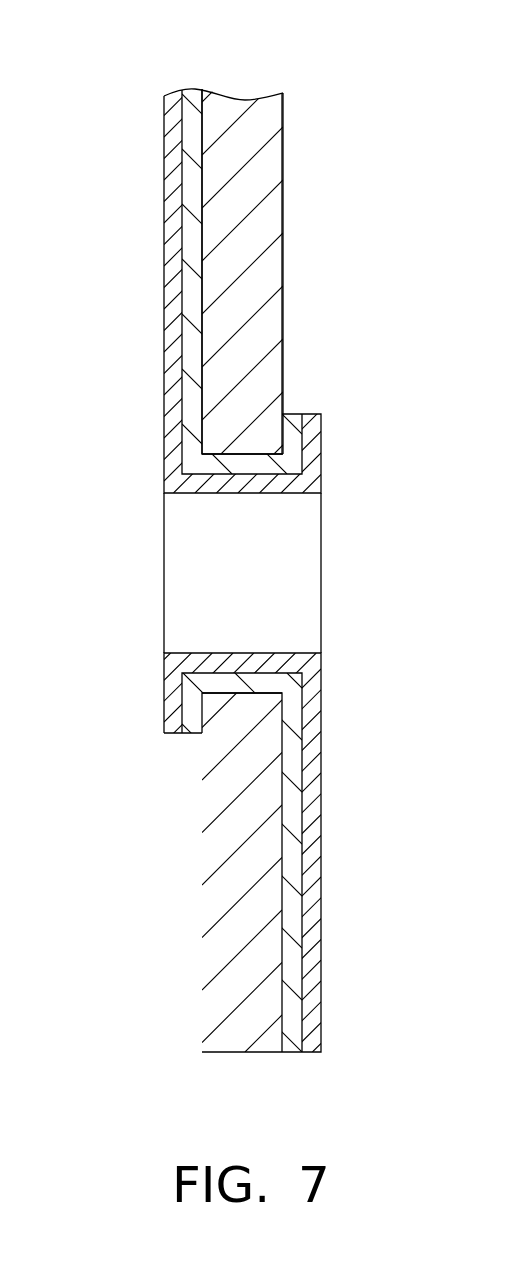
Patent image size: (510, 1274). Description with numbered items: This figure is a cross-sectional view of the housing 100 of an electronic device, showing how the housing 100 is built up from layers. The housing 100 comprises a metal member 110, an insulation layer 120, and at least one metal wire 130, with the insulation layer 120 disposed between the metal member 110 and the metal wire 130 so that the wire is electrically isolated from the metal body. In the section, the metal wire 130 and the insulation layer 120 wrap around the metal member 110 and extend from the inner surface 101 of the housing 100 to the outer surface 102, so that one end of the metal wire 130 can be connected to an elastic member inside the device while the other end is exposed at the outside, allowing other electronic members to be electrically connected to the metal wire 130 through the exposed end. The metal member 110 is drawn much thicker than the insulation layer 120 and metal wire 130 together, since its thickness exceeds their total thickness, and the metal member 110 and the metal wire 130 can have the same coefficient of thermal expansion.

The housing 100 is at (245, 530).
The metal member 110 is at (262, 177).
The insulation layer 120 is at (192, 118).
The metal wire 130 is at (173, 179).
The inner surface 101 is at (207, 257).
The outer surface 102 is at (282, 255).